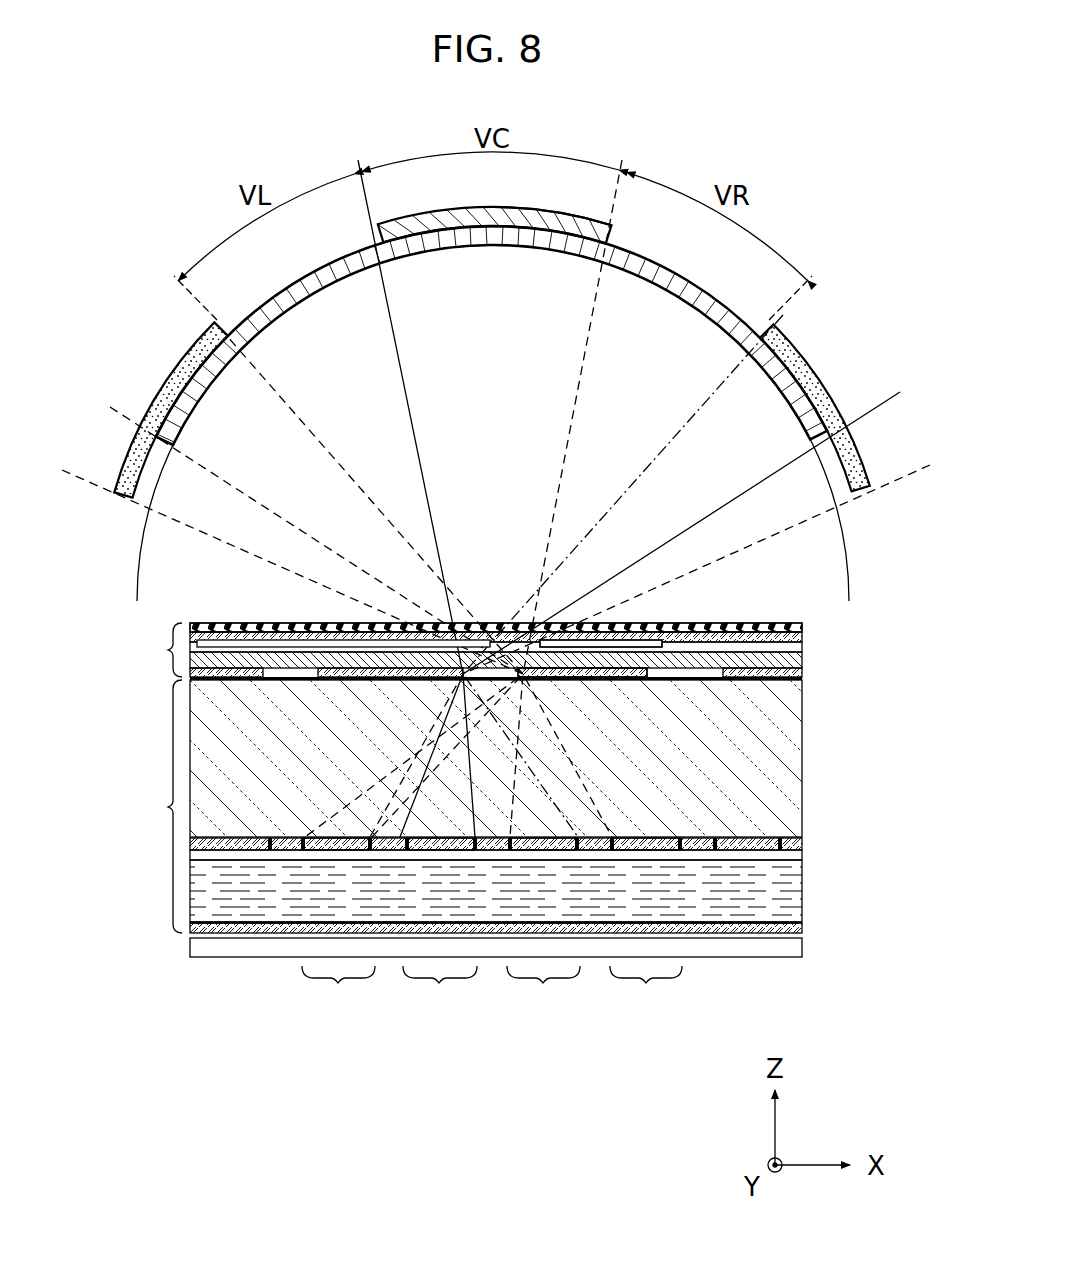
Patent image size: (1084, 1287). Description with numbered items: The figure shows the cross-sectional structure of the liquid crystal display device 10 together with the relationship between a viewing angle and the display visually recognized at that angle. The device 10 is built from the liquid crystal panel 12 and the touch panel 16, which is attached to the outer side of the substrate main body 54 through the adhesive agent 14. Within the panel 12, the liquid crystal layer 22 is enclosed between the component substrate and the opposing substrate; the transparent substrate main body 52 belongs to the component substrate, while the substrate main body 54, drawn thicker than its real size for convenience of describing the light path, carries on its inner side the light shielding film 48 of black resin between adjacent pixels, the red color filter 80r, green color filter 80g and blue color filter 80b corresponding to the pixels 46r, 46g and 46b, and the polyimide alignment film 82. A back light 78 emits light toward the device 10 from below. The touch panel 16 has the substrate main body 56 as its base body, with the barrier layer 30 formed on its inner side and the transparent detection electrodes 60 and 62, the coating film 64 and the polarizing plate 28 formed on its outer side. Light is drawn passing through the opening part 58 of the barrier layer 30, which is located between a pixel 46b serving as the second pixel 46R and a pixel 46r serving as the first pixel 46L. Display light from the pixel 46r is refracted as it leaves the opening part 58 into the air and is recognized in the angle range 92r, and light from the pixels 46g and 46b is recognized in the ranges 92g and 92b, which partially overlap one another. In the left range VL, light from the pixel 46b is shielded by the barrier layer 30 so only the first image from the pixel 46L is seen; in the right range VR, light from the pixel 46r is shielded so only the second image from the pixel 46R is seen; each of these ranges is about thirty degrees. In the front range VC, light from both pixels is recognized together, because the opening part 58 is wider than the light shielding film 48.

The liquid crystal display device 10 is at (875, 572).
The liquid crystal panel 12 is at (156, 806).
The adhesive agent 14 is at (804, 675).
The touch panel 16 is at (156, 650).
The liquid crystal layer 22 is at (804, 885).
The polarizing plate 28 is at (804, 627).
The barrier layer 30 is at (722, 685).
The pixel 46g is at (494, 987).
The first pixel 46L is at (545, 987).
The pixel 46b is at (440, 987).
The second pixel 46R is at (440, 844).
The pixel 46r is at (543, 844).
The light shielding film 48 is at (486, 852).
The substrate main body 52 is at (804, 928).
The substrate main body 54 is at (804, 760).
The substrate main body 56 is at (804, 660).
The opening part 58 is at (677, 663).
The detection electrode 60 is at (250, 644).
The detection electrode 62 is at (763, 628).
The coating film 64 is at (804, 641).
The back light 78 is at (804, 950).
The green color filter 80g is at (333, 852).
The blue color filter 80b is at (431, 852).
The red color filter 80r is at (540, 852).
The alignment film 82 is at (804, 848).
The angle range 92g is at (168, 387).
The angle range 92r is at (370, 270).
The angle range 92b is at (668, 263).